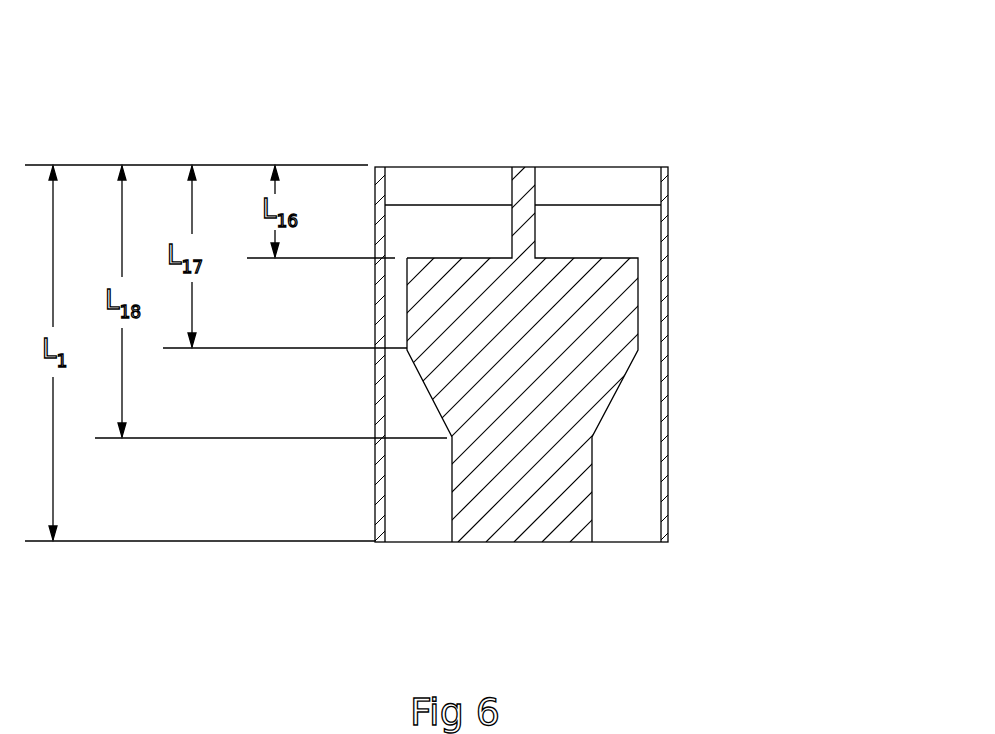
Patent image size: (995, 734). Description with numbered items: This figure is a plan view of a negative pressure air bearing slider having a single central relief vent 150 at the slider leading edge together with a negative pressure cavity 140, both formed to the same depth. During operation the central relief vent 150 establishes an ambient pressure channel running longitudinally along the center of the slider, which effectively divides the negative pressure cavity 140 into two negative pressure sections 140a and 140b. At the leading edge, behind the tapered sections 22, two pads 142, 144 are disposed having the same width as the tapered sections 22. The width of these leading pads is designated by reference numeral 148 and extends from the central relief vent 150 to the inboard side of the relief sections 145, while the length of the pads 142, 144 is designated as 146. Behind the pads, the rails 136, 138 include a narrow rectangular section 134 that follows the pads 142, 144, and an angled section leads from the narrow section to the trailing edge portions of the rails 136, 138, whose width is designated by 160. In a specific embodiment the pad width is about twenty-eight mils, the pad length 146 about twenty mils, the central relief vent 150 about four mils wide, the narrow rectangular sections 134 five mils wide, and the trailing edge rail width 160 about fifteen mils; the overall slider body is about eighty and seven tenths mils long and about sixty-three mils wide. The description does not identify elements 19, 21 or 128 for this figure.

The substrate 19 is at (668, 547).
The upper surface 21 is at (470, 182).
The tapered sections 22 is at (421, 182).
The housing wall 128 is at (652, 348).
The narrow rectangular section 134 is at (428, 262).
The rail 136 is at (445, 519).
The rail 138 is at (652, 519).
The negative pressure cavity 140 is at (550, 405).
The negative pressure section 140a is at (498, 297).
The negative pressure section 140b is at (618, 297).
The pad 142 is at (475, 244).
The pad 144 is at (620, 244).
The relief sections 145 is at (377, 458).
The length of the pads 146 is at (524, 210).
The width of the leading pads 148 is at (380, 327).
The central relief vent 150 is at (515, 200).
The width of the trailing edge portions of the rails 160 is at (408, 545).